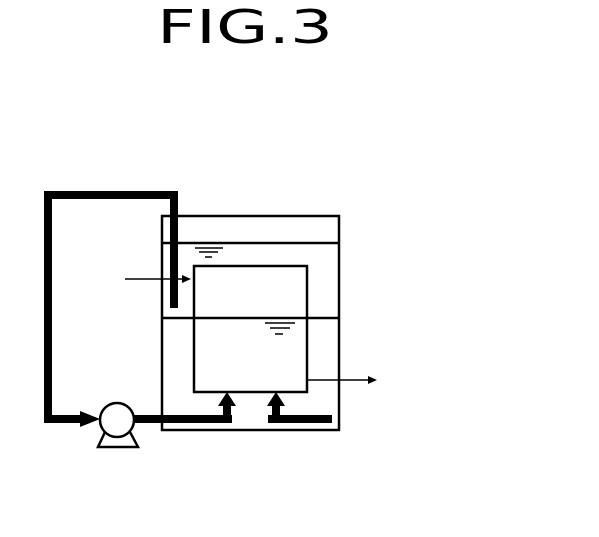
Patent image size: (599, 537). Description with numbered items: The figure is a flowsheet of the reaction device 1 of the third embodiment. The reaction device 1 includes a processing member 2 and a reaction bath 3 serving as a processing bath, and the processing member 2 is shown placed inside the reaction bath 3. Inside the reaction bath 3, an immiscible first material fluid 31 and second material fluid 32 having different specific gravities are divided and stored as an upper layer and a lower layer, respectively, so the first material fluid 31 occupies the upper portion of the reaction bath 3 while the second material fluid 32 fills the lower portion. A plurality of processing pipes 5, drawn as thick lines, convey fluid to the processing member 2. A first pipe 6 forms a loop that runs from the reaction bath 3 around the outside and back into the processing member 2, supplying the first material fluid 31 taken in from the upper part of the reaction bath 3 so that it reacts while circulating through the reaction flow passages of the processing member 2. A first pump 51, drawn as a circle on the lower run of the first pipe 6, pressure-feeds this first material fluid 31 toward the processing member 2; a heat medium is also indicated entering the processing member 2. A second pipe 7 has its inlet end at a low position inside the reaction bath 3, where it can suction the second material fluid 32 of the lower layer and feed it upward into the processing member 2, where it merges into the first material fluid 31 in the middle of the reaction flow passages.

The reaction device 1 is at (363, 160).
The processing member 2 is at (293, 308).
The reaction bath 3 is at (295, 215).
The first material fluid 31 is at (333, 253).
The second material fluid 32 is at (333, 345).
The processing pipes 5 is at (191, 343).
The first pipe 6 is at (53, 425).
The second pipe 7 is at (298, 425).
The first pump 51 is at (118, 402).